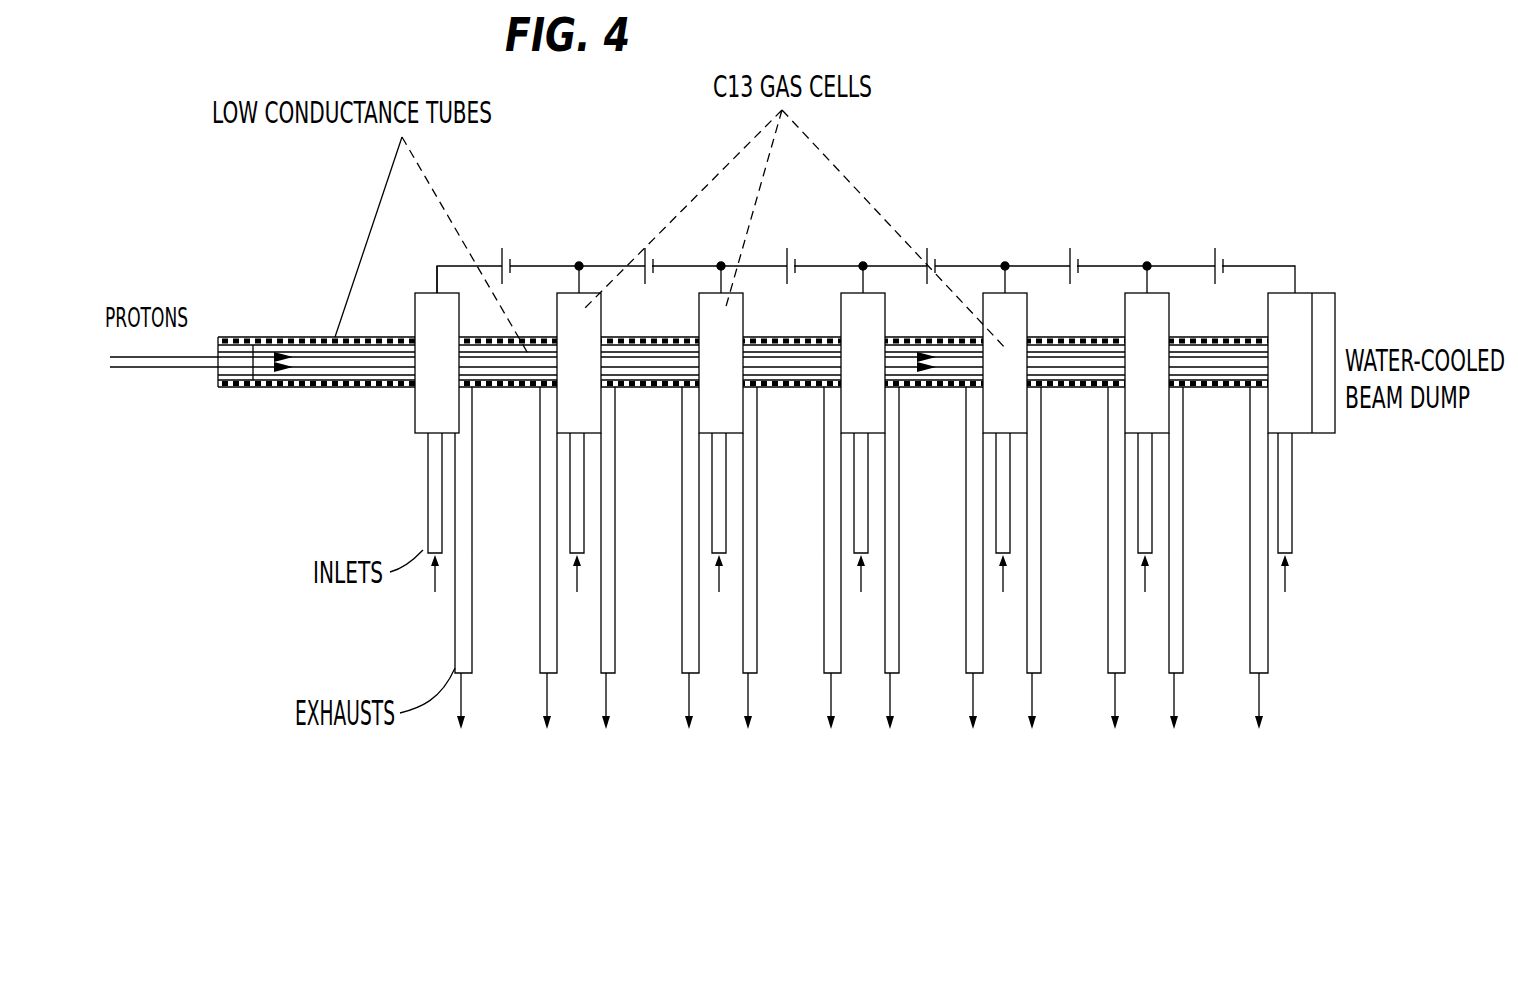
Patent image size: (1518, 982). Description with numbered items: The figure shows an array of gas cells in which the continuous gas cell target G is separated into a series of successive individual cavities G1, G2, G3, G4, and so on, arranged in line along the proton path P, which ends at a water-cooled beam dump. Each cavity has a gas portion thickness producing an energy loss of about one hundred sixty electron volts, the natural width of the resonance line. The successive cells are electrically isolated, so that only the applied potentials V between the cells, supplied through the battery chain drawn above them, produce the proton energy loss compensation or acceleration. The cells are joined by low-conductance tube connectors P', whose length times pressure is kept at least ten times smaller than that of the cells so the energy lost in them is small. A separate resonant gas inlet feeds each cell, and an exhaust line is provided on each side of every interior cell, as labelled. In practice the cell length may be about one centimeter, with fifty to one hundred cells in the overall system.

The proton beam path P is at (689, 329).
The low-conductance tube connector P' is at (743, 335).
The gas cell target G is at (853, 446).
The first discrete gas cell G1 is at (424, 408).
The second discrete gas cell G2 is at (599, 330).
The third discrete gas cell G3 is at (728, 327).
The fourth discrete gas cell G4 is at (870, 324).
The applied potential V is at (505, 249).